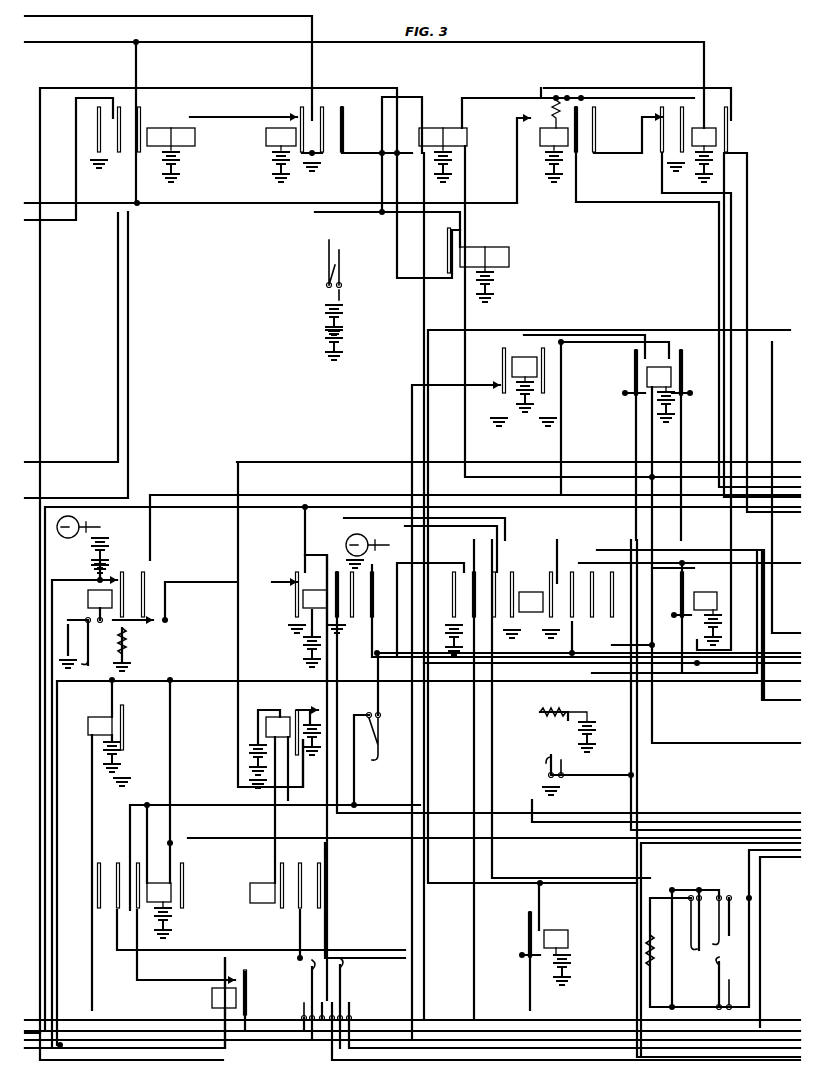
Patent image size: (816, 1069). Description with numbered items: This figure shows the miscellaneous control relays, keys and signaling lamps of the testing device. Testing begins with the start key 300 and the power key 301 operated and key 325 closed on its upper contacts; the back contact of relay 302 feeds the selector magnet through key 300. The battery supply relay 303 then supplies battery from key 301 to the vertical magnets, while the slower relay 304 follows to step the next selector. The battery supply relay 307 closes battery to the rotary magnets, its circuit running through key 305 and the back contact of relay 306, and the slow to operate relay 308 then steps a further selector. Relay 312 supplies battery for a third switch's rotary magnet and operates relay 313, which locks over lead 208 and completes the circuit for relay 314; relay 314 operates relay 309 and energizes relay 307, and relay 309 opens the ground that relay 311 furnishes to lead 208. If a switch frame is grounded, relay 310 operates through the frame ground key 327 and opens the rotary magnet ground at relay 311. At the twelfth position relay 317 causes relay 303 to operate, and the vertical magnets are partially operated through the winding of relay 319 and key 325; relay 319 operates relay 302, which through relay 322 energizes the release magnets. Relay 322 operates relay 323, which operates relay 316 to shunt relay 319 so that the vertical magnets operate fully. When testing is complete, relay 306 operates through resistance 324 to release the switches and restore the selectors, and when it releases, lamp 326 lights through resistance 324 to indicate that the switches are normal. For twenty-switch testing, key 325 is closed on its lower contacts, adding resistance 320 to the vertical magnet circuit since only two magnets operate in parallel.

The lead 208 is at (226, 202).
The start key 300 is at (371, 714).
The power key 301 is at (336, 242).
The relay 302 is at (276, 717).
The battery supply relay 303 is at (497, 250).
The relay 304 is at (656, 348).
The key 305 is at (340, 968).
The relay 306 is at (526, 590).
The battery supply relay 307 is at (450, 121).
The slow to operate relay 308 is at (706, 588).
The relay 309 is at (570, 140).
The relay 310 is at (88, 599).
The relay 311 is at (303, 599).
The relay 312 is at (266, 137).
The relay 313 is at (160, 128).
The relay 314 is at (716, 136).
The relay 316 is at (100, 718).
The relay 317 is at (523, 346).
The relay 319 is at (262, 905).
The resistance 320 is at (645, 952).
The relay 322 is at (212, 997).
The relay 323 is at (172, 892).
The resistance 324 is at (555, 712).
The key 325 is at (731, 952).
The lamp 326 is at (554, 932).
The frame ground key 327 is at (97, 655).